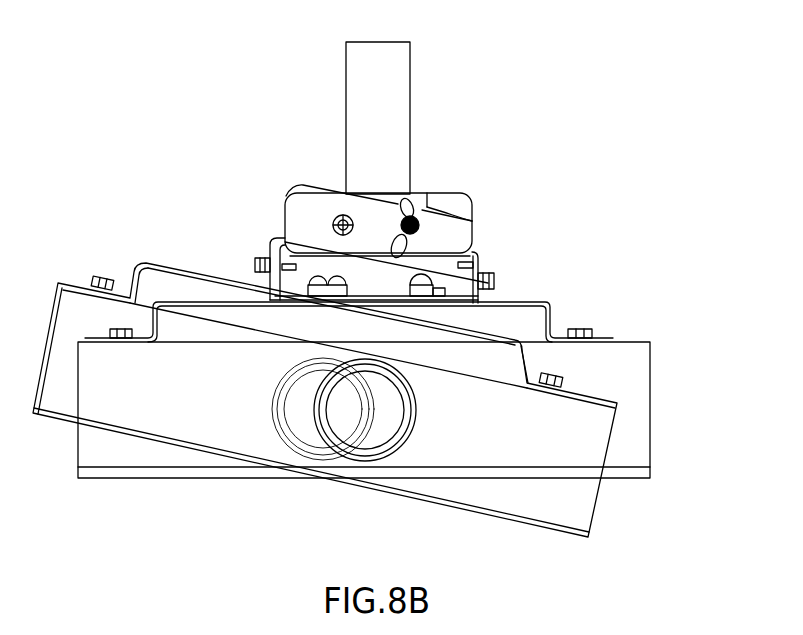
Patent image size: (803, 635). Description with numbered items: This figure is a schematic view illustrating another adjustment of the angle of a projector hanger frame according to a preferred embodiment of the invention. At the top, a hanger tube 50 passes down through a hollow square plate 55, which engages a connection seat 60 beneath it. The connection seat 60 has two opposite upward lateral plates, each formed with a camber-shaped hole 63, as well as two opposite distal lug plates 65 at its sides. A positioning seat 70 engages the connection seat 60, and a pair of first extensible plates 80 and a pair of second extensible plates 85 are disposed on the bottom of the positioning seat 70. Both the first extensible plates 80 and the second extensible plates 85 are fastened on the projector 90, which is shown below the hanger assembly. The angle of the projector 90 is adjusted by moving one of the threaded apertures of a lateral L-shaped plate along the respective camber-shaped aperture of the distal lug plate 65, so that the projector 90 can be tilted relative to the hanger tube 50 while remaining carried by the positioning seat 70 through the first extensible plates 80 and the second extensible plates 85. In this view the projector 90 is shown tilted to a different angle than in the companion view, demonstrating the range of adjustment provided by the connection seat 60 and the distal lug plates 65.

The hanger tube 50 is at (397, 92).
The hollow square plate 55 is at (460, 190).
The connection seat 60 is at (472, 220).
The camber-shaped hole 63 is at (420, 237).
The distal lug plate 65 is at (480, 262).
The positioning seat 70 is at (488, 284).
The first extensible plate 80 is at (190, 305).
The second extensible plate 85 is at (550, 322).
The projector 90 is at (635, 428).